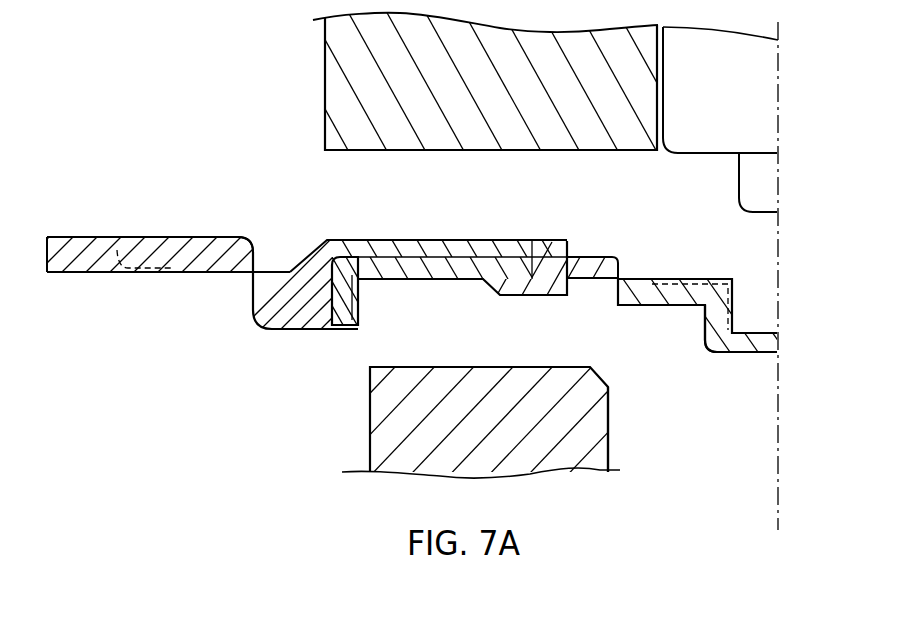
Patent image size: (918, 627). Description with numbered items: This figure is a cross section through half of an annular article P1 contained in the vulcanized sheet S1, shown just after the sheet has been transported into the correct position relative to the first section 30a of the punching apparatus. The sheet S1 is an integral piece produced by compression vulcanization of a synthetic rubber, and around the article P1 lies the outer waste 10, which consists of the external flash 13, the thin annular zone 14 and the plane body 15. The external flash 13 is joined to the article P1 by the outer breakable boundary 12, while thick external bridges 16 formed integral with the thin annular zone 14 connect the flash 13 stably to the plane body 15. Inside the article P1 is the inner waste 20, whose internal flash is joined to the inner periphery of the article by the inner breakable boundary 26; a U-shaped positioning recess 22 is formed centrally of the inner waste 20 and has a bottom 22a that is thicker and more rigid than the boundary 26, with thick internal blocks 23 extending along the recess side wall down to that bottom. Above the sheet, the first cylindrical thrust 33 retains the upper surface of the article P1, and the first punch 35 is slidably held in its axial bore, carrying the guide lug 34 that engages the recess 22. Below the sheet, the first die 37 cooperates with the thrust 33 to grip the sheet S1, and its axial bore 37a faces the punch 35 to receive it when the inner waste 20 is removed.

The first cylindrical thrust 33 is at (340, 62).
The first section 30a is at (258, 113).
The first punch 35 is at (737, 92).
The guide lug 34 is at (768, 180).
The outer waste 10 is at (102, 228).
The plane body 15 is at (70, 237).
The external bridge 16 is at (147, 246).
The external flash 13 is at (213, 242).
The outer breakable boundary 12 is at (257, 275).
The vulcanized sheet S1 is at (93, 278).
The thin annular zone 14 is at (150, 273).
The annular article P1 is at (305, 318).
The inner breakable boundary 26 is at (625, 270).
The internal block 23 is at (668, 296).
The positioning recess 22 is at (735, 306).
The inner waste 20 is at (683, 328).
The bottom of recess 22a is at (742, 352).
The first die 37 is at (385, 440).
The bore of first die 37a is at (608, 449).